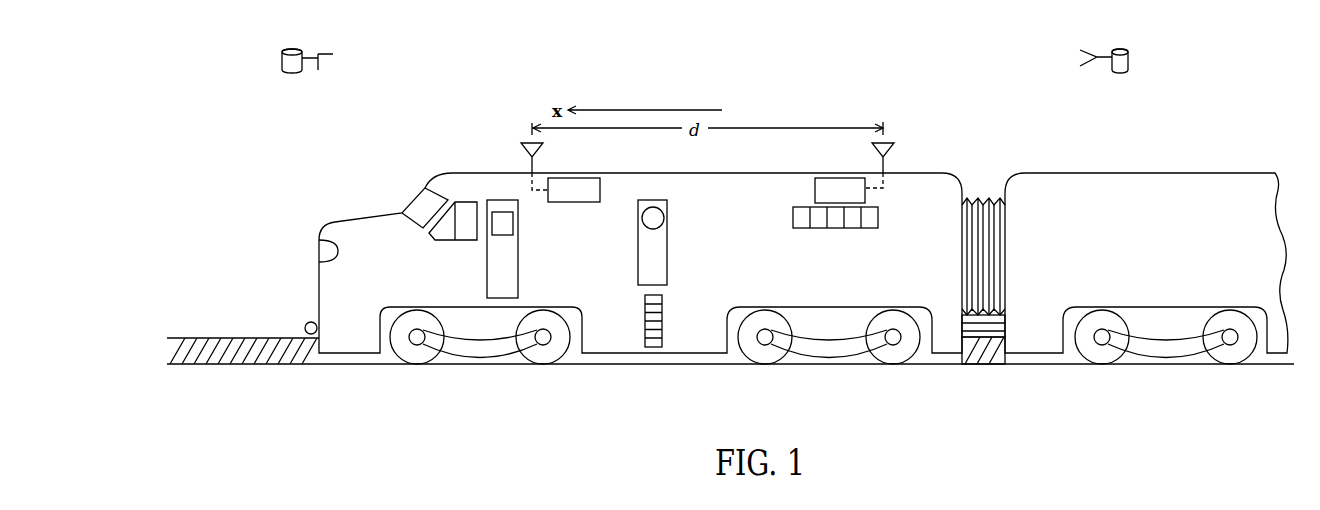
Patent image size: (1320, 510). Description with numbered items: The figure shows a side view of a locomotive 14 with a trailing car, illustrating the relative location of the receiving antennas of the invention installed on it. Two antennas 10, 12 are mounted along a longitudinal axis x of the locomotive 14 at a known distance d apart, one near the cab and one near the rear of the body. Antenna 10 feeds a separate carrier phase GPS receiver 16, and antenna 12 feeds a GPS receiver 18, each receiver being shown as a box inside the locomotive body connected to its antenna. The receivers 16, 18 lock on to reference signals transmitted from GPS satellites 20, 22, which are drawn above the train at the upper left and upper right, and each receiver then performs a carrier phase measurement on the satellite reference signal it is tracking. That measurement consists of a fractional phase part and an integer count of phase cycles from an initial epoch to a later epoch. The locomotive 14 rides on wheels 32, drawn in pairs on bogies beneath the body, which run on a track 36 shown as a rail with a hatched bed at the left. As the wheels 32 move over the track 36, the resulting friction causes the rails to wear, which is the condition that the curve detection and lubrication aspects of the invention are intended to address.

The antenna 10 is at (544, 151).
The antenna 12 is at (894, 152).
The locomotive 14 is at (620, 322).
The carrier phase GPS receiver 16 is at (600, 190).
The GPS receiver 18 is at (813, 190).
The GPS satellite 20 is at (1118, 70).
The GPS satellite 22 is at (290, 70).
The wheels 32 is at (417, 358).
The track 36 is at (240, 365).